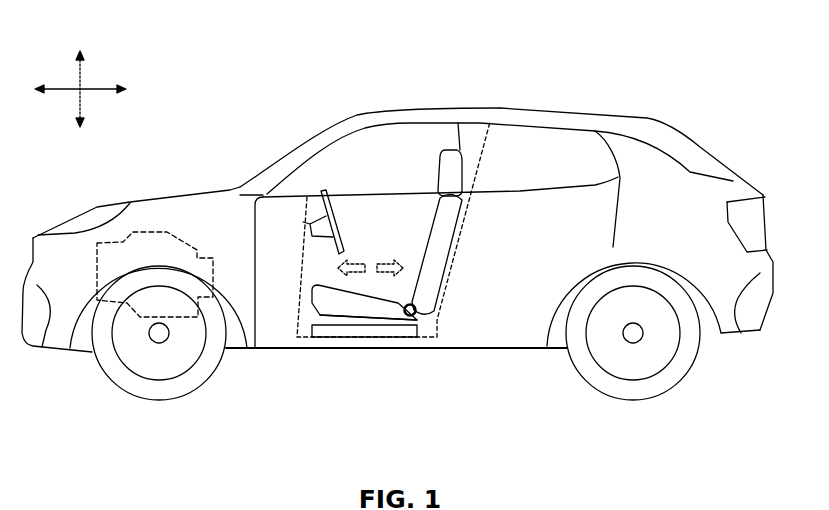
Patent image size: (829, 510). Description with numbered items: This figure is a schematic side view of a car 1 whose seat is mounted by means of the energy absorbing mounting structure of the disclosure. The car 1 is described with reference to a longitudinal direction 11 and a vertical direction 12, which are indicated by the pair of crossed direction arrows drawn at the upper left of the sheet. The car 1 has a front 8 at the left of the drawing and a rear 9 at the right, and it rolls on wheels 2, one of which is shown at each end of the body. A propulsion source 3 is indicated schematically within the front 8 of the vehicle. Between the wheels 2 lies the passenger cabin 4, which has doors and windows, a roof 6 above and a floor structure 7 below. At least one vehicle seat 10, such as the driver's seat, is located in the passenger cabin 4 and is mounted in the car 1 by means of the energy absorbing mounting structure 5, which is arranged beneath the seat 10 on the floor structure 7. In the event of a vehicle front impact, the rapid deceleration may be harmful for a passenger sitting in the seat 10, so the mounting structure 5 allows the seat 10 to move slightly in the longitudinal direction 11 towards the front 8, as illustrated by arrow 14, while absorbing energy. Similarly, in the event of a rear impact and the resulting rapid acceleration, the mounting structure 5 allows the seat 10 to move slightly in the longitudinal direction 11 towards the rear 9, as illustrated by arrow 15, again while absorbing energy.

The car 1 is at (690, 79).
The wheels 2 is at (148, 368).
The propulsion source 3 is at (181, 310).
The passenger cabin 4 is at (380, 230).
The energy absorbing mounting structure 5 is at (340, 339).
The roof 6 is at (486, 112).
The floor structure 7 is at (415, 343).
The front 8 is at (42, 350).
The rear 9 is at (740, 335).
The vehicle seat 10 is at (379, 310).
The longitudinal direction 11 is at (83, 78).
The vertical direction 12 is at (80, 77).
The arrow 14 is at (350, 262).
The arrow 15 is at (380, 258).